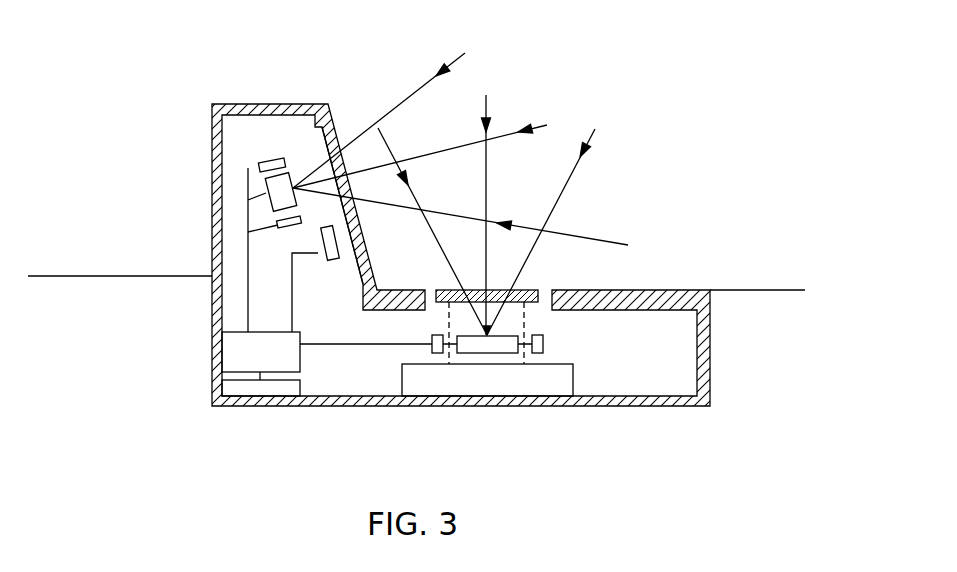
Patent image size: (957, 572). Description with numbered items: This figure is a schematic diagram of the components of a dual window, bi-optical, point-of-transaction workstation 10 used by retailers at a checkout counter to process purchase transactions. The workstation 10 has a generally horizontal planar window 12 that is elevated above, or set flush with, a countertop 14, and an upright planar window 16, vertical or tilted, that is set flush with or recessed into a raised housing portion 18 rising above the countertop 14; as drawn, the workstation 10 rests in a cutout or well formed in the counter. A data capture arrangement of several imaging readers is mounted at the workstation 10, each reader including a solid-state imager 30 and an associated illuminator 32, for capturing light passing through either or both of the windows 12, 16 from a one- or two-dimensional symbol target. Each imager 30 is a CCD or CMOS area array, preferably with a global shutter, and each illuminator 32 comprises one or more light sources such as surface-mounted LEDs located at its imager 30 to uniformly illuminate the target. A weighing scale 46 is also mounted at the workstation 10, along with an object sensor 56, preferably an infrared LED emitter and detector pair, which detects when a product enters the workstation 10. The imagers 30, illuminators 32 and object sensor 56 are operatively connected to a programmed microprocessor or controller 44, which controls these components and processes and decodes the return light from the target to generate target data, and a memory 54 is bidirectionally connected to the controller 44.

The point-of-transaction workstation 10 is at (588, 227).
The horizontal planar window 12 is at (528, 290).
The countertop 14 is at (66, 278).
The upright planar window 16 is at (360, 226).
The raised housing portion 18 is at (297, 103).
The solid-state imager 30 is at (496, 418).
The illuminator 32 is at (556, 418).
The controller 44 is at (228, 353).
The weighing scale 46 is at (414, 384).
The memory 54 is at (228, 390).
The object sensor 56 is at (322, 250).